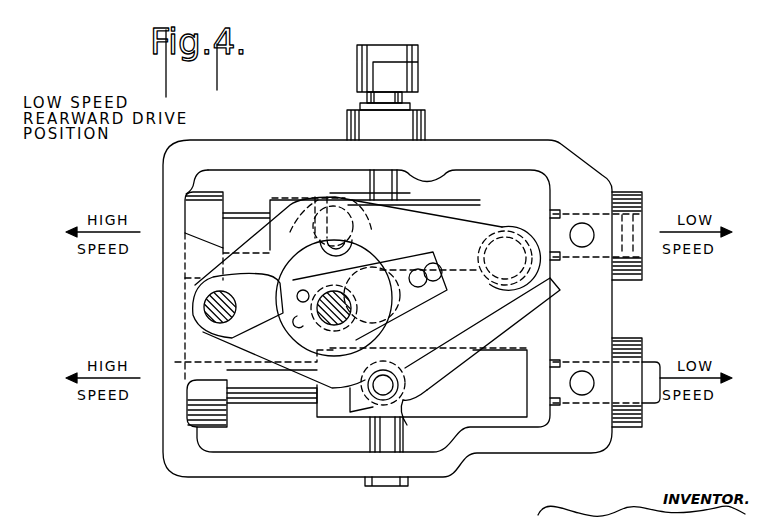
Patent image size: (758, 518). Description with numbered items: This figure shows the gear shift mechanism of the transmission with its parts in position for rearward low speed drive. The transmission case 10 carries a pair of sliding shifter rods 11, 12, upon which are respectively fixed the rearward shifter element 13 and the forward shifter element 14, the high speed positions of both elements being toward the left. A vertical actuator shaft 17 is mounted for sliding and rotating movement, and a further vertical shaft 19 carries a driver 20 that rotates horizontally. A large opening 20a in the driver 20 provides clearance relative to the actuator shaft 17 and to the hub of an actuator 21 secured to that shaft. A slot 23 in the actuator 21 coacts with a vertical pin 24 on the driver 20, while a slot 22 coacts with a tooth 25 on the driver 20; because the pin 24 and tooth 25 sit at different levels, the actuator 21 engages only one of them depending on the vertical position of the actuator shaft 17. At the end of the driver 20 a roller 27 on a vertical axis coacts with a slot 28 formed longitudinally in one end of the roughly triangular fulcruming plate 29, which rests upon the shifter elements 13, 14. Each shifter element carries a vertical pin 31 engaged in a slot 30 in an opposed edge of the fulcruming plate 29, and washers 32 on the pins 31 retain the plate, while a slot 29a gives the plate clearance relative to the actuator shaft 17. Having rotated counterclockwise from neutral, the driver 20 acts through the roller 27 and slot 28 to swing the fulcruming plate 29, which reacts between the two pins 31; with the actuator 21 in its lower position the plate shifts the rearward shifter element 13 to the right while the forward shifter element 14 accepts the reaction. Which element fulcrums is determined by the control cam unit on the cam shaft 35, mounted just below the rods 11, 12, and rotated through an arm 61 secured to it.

The transmission case 10 is at (510, 460).
The sliding shifter rod 11 is at (243, 397).
The sliding shifter rod 12 is at (240, 215).
The rearward shifter element 13 is at (328, 408).
The forward shifter element 14 is at (283, 200).
The actuator shaft 17 is at (346, 318).
The vertical shaft 19 is at (210, 300).
The driver 20 is at (480, 222).
The large opening 20a is at (273, 279).
The actuator 21 is at (403, 306).
The slot 22 is at (295, 330).
The slot 23 is at (433, 283).
The vertical pin 24 is at (434, 268).
The tooth 25 is at (297, 297).
The roller 27 is at (520, 262).
The slot 28 is at (524, 223).
The fulcruming plate 29 is at (457, 204).
The slot 29a is at (378, 245).
The slot 30 is at (320, 208).
The vertical pin 31 is at (326, 205).
The washer 32 is at (356, 255).
The cam shaft 35 is at (398, 186).
The arm 61 is at (398, 52).